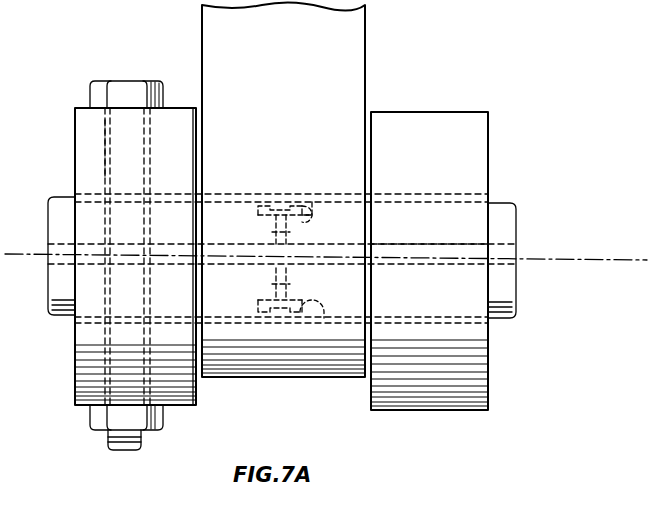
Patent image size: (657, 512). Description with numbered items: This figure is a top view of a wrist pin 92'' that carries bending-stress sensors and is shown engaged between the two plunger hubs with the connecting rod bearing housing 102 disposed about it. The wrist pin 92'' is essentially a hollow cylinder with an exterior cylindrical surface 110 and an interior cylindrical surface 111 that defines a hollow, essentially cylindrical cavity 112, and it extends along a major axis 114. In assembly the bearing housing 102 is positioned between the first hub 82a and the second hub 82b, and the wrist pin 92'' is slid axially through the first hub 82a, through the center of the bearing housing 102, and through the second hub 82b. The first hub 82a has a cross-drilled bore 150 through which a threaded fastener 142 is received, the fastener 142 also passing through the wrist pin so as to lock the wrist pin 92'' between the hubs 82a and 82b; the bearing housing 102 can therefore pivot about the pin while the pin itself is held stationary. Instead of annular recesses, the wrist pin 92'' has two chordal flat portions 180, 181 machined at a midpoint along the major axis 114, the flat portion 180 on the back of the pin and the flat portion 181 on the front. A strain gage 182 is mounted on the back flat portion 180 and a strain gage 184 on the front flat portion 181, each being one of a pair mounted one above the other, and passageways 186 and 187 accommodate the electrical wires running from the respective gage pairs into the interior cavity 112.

The first hub 82a is at (80, 122).
The second hub 82b is at (480, 120).
The bearing housing 102 is at (350, 47).
The fastener 142 is at (130, 90).
The bore 150 is at (100, 150).
The wrist pin 92'' is at (522, 235).
The major axis 114 is at (588, 260).
The flat portion 180 is at (312, 195).
The strain gage 182 is at (281, 195).
The passageway 186 is at (270, 232).
The interior cylindrical surface 111 is at (316, 250).
The cavity 112 is at (423, 240).
The passageway 187 is at (290, 288).
The strain gage 184 is at (270, 316).
The exterior cylindrical surface 110 is at (313, 326).
The flat portion 181 is at (320, 324).